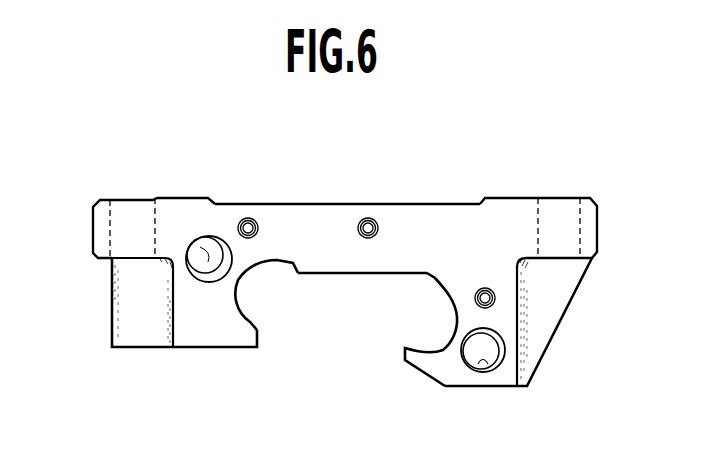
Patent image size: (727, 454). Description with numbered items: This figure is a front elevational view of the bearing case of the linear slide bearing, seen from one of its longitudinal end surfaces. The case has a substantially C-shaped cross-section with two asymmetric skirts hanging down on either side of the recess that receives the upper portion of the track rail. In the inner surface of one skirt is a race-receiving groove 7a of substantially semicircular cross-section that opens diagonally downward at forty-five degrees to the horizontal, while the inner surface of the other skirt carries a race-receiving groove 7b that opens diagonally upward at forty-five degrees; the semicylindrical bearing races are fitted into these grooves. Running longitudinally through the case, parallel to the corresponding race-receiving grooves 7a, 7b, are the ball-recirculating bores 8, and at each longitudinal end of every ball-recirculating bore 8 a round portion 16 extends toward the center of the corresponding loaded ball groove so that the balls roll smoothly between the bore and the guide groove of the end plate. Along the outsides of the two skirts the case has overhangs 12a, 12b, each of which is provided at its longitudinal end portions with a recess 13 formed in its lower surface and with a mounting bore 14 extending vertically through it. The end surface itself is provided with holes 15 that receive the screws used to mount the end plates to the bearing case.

The race-receiving groove 7a is at (238, 293).
The race-receiving groove 7b is at (438, 348).
The ball-recirculating bore 8 is at (203, 262).
The overhang 12a is at (93, 237).
The overhang 12b is at (597, 240).
The recess 13 is at (128, 313).
The mounting bore 14 is at (112, 228).
The hole 15 is at (365, 222).
The round portion 16 is at (228, 262).